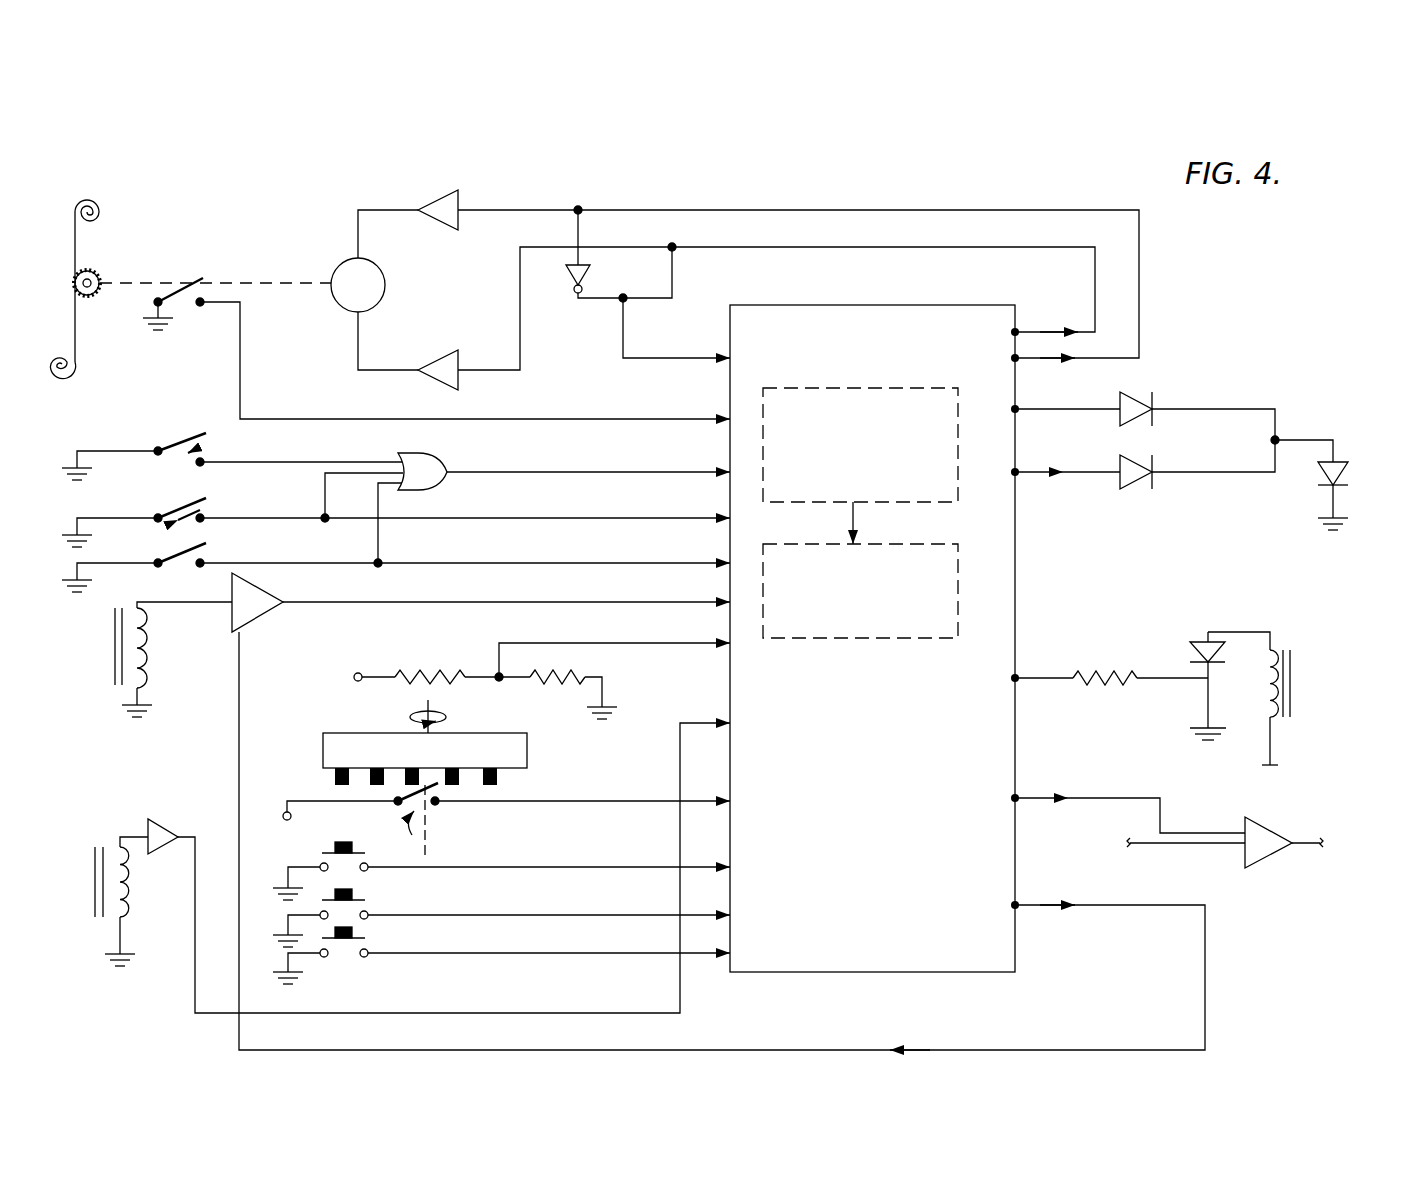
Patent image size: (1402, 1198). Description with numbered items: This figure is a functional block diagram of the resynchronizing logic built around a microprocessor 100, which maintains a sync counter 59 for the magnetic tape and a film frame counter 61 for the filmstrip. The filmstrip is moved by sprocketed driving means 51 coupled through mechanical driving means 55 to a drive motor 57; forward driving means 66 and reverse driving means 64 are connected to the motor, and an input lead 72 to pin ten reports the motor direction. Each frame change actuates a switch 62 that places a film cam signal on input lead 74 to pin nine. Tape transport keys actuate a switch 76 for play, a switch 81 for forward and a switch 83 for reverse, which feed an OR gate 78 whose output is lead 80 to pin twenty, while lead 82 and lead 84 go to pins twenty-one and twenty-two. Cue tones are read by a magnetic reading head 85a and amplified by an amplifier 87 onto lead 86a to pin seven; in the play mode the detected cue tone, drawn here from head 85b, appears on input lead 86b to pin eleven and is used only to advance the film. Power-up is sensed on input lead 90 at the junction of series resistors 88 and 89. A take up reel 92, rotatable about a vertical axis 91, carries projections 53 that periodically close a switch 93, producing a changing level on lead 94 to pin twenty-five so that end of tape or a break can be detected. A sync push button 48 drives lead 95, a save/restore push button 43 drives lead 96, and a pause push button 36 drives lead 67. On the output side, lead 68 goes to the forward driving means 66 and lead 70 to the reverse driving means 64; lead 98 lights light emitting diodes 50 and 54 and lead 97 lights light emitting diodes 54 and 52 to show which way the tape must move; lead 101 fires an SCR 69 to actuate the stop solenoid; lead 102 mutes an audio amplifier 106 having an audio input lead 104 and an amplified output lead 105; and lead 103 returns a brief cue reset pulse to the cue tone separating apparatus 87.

The pause push button 36 is at (340, 940).
The save/restore push button 43 is at (360, 896).
The sync push button 48 is at (348, 846).
The light emitting diode 50 is at (1155, 421).
The sprocketed driving means 51 is at (100, 272).
The light emitting diode 52 is at (1153, 483).
The projections 53 is at (77, 250).
The light emitting diode 54 is at (1348, 473).
The mechanical driving means 55 is at (291, 277).
The drive motor 57 is at (386, 287).
The sync counter 59 is at (903, 640).
The film frame counter 61 is at (883, 385).
The switch 62 is at (176, 302).
The reverse driving means 64 is at (444, 364).
The forward driving means 66 is at (441, 204).
The lead 67 is at (628, 952).
The lead 68 is at (993, 209).
The SCR 69 is at (1195, 652).
The output lead 70 is at (993, 247).
The input lead 72 is at (624, 338).
The input lead 74 is at (532, 418).
The switch 76 is at (210, 447).
The OR gate 78 is at (420, 462).
The input lead 80 is at (541, 470).
The switch 81 is at (205, 499).
The input lead 82 is at (536, 516).
The switch 83 is at (186, 562).
The input lead 84 is at (536, 561).
The magnetic reading head 85a is at (113, 663).
The sync playback head 85b is at (126, 892).
The lead 86a is at (528, 601).
The input lead 86b is at (210, 816).
The amplifier 87 is at (262, 620).
The resistor 88 is at (437, 672).
The resistor 89 is at (577, 676).
The input lead 90 is at (586, 643).
The vertical axis 91 is at (445, 710).
The take up reel 92 is at (528, 756).
The switch 93 is at (428, 833).
The input lead 94 is at (596, 800).
The input lead 95 is at (588, 866).
The input lead 96 is at (636, 914).
The output lead 97 is at (1033, 471).
The output lead 98 is at (1082, 408).
The microprocessor 100 is at (872, 816).
The output lead 101 is at (1040, 677).
The output lead 102 is at (1095, 796).
The output lead 103 is at (812, 1048).
The lead 104 is at (1188, 848).
The lead 105 is at (1305, 860).
The audio amplifier 106 is at (1283, 810).